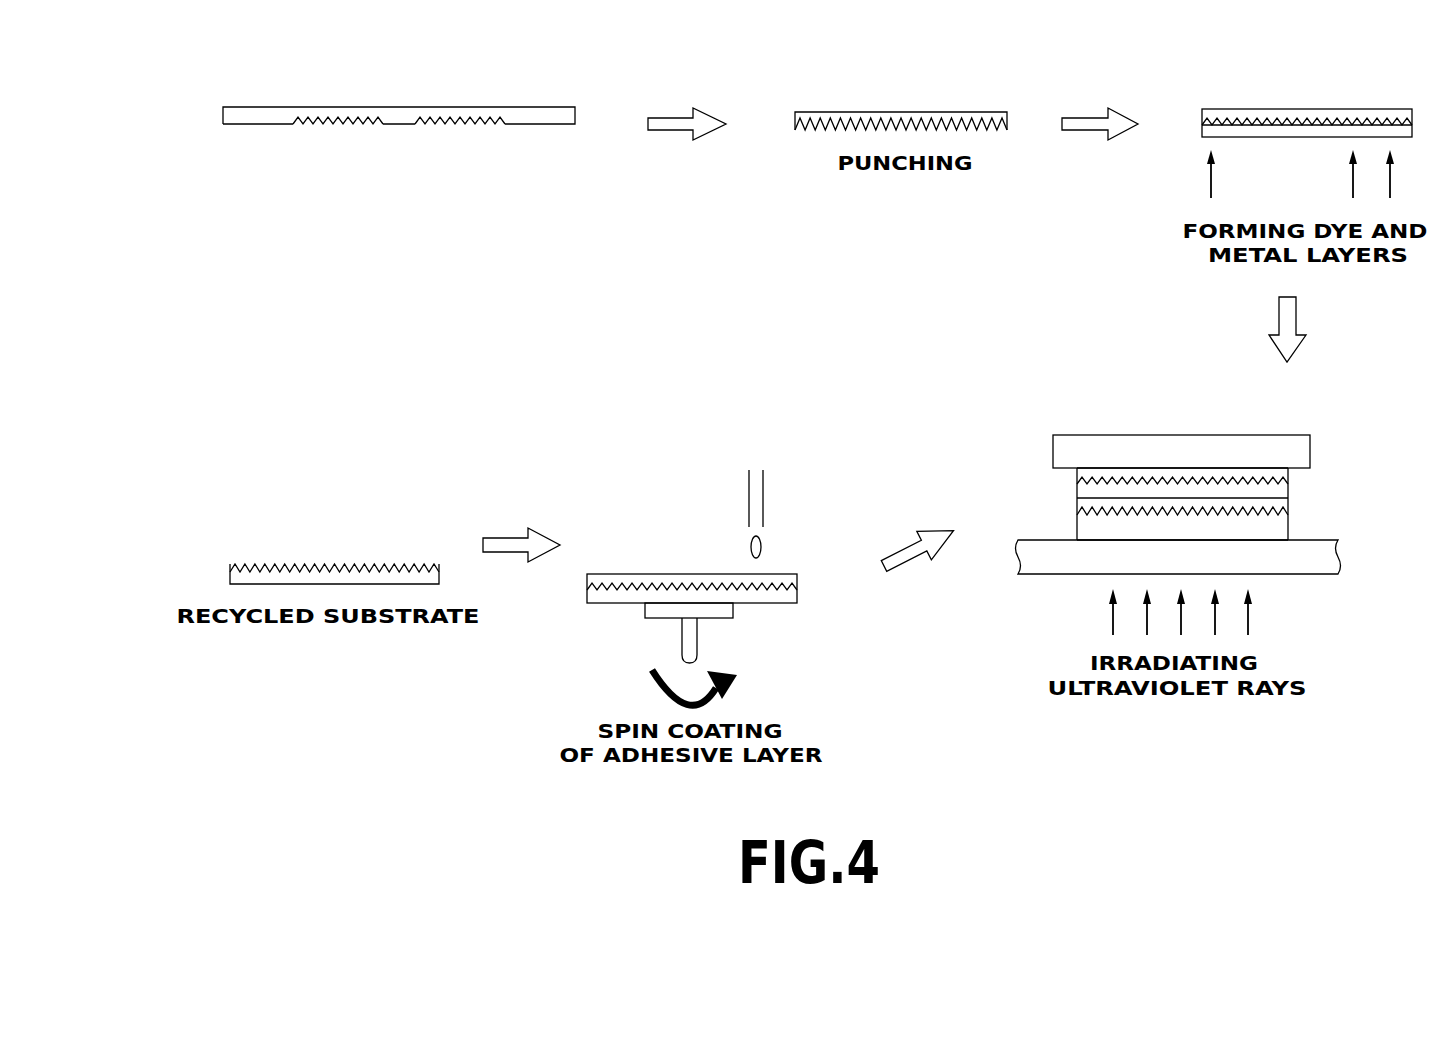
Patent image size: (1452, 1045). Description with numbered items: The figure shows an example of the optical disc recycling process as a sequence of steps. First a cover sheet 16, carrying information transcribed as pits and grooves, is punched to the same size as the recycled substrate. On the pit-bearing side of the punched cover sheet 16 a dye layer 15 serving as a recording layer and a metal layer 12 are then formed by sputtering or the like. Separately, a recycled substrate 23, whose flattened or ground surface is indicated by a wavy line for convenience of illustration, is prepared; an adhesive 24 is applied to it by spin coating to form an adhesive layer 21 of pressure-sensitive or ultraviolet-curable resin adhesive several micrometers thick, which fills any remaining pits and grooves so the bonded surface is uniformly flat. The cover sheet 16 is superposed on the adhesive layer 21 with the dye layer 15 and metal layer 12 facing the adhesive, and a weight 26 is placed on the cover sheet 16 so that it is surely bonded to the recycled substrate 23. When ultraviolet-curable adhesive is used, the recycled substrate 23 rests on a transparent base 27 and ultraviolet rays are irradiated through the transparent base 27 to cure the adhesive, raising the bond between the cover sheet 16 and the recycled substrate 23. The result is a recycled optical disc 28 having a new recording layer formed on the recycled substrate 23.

The cover sheet 16 is at (1362, 462).
The dye layer 15 is at (1258, 312).
The metal layer 12 is at (1353, 488).
The adhesive layer 21 is at (1348, 513).
The recycled substrate 23 is at (1380, 538).
The adhesive 24 is at (763, 543).
The weight 26 is at (1128, 445).
The transparent base 27 is at (1297, 569).
The recycled optical disc 28 is at (1362, 430).